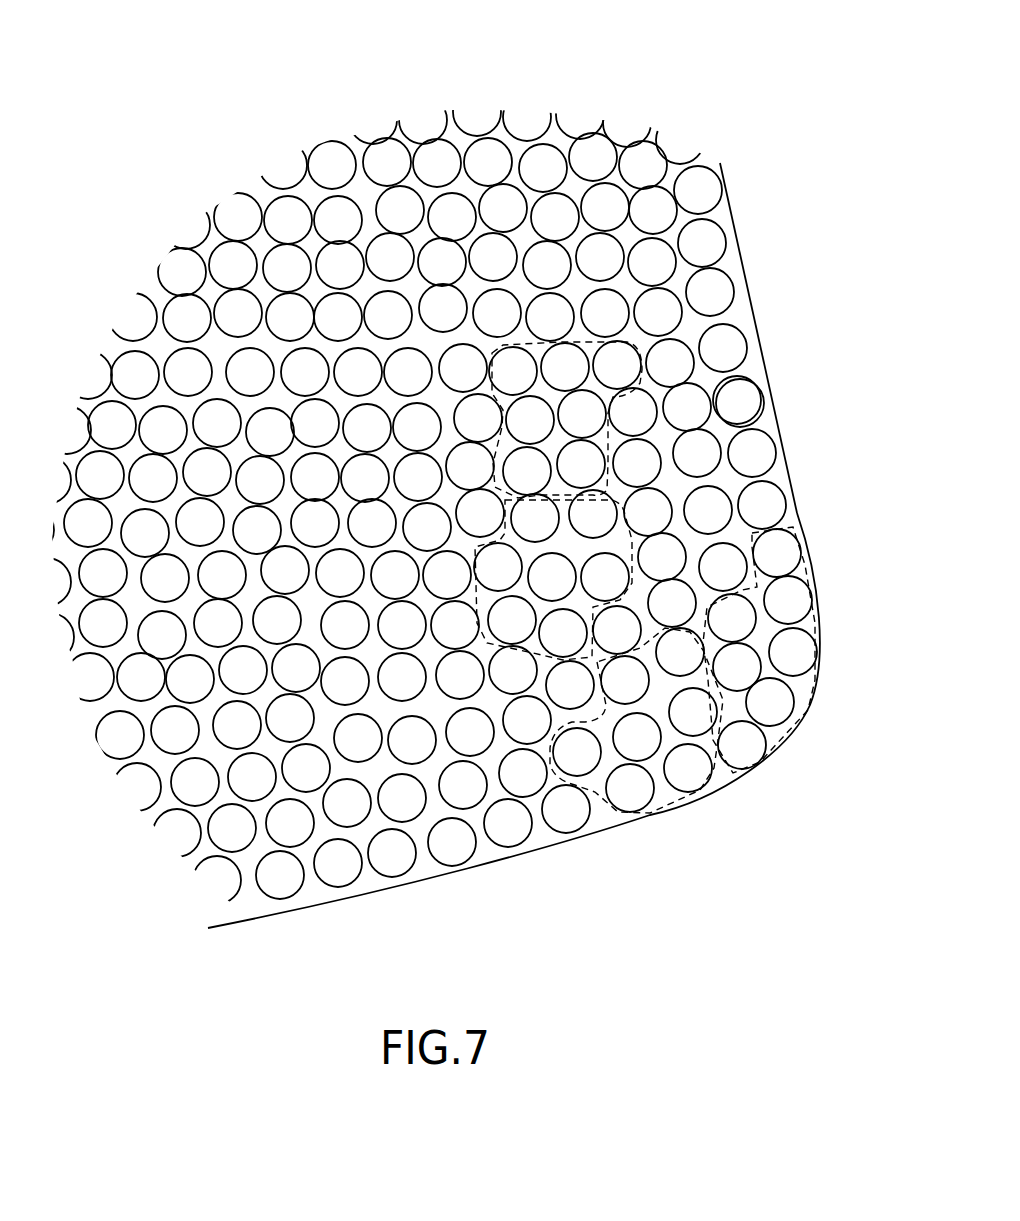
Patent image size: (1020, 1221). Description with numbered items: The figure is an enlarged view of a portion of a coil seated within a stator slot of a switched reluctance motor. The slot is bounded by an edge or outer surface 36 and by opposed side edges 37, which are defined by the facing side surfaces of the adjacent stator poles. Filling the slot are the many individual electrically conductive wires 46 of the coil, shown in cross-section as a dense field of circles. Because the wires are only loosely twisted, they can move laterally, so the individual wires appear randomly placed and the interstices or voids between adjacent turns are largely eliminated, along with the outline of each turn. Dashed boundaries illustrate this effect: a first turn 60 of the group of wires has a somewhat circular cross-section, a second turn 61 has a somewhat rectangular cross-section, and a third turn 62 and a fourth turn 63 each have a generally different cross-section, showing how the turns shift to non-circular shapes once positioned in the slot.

The outer surface 36 is at (328, 912).
The side edges 37 is at (768, 372).
The electrically conductive wires 46 is at (437, 163).
The first turn 60 is at (627, 543).
The second turn 61 is at (657, 330).
The third turn 62 is at (652, 815).
The fourth turn 63 is at (802, 725).